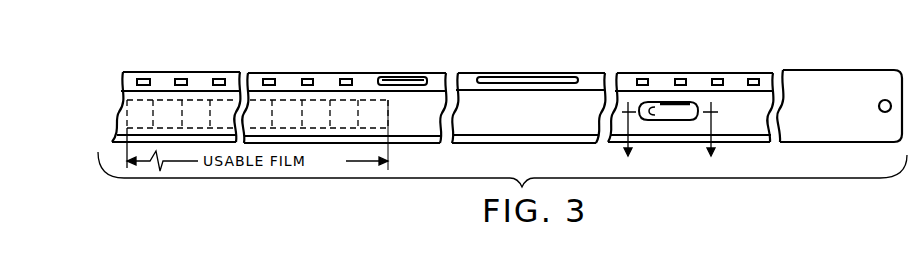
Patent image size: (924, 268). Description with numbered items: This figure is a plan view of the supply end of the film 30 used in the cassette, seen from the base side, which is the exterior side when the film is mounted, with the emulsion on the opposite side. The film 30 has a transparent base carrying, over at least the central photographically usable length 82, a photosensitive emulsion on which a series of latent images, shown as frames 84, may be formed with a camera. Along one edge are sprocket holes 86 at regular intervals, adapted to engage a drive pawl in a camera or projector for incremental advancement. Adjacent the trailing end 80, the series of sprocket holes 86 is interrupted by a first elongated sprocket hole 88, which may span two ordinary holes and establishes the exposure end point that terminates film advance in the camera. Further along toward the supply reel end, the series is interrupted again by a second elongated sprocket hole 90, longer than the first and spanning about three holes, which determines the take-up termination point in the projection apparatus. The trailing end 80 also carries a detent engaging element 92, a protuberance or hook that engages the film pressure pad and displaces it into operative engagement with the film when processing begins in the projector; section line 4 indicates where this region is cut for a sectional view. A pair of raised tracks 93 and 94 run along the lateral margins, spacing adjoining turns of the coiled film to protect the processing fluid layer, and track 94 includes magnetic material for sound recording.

The film 30 is at (466, 65).
The trailing end 80 is at (803, 67).
The photographically usable length 82 is at (283, 69).
The frames 84 is at (388, 113).
The sprocket holes 86 is at (181, 78).
The first elongated sprocket hole 88 is at (413, 77).
The second elongated sprocket hole 90 is at (533, 77).
The detent engaging element 92 is at (651, 101).
The raised track 93 is at (124, 82).
The raised track 94 is at (128, 138).
The section line 4- 4 is at (668, 134).